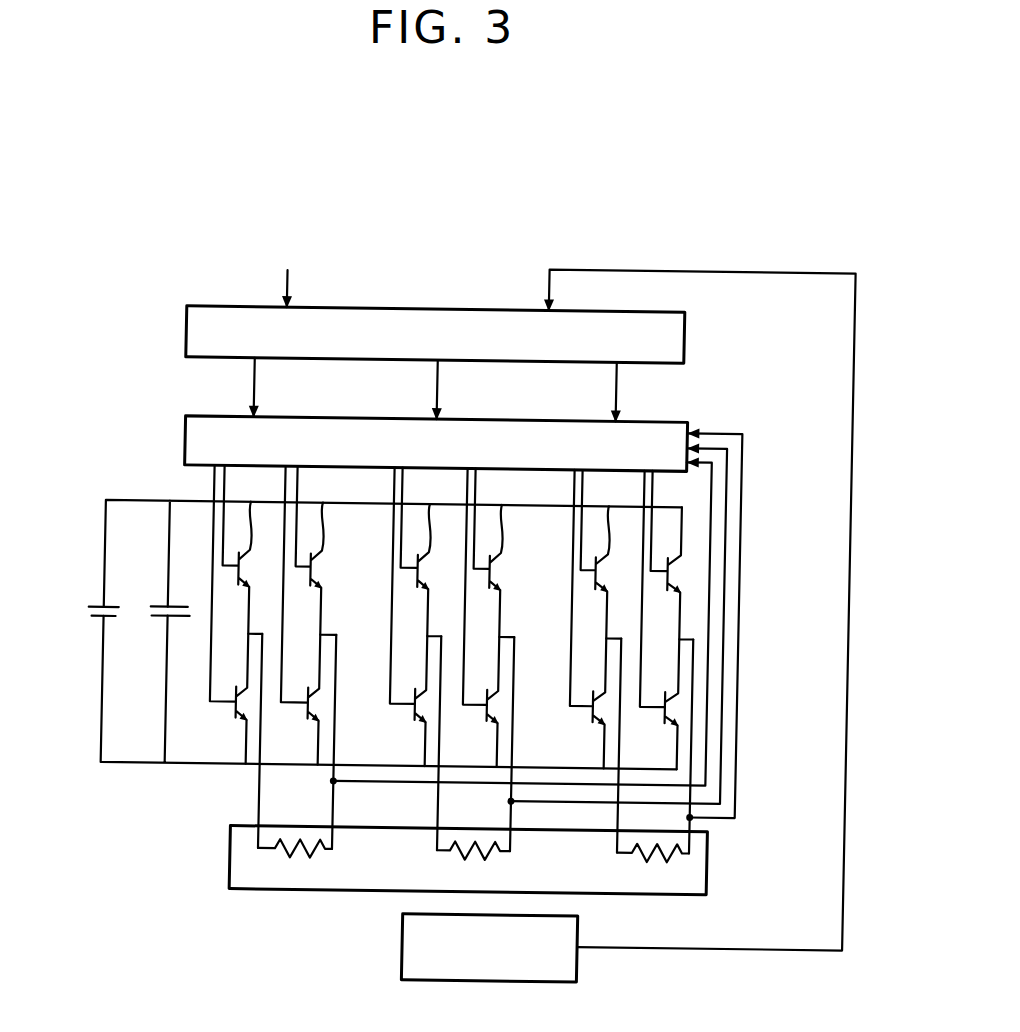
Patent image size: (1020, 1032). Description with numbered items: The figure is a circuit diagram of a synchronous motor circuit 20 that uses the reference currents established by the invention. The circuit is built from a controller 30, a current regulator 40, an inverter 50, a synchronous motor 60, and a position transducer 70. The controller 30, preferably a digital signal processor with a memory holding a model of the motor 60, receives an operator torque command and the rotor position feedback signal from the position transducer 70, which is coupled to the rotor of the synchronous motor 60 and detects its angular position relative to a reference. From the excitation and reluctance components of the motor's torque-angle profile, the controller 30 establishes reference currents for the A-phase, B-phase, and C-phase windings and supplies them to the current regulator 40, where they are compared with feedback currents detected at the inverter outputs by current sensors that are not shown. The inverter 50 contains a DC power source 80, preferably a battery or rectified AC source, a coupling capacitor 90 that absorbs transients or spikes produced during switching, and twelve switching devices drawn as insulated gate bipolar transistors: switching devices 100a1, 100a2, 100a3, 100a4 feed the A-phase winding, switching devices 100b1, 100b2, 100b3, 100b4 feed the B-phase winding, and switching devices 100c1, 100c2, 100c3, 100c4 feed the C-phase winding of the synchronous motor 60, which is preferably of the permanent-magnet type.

The synchronous motor circuit 20 is at (485, 188).
The controller 30 is at (180, 322).
The current regulator 40 is at (181, 437).
The inverter 50 is at (94, 553).
The synchronous motor 60 is at (235, 859).
The position transducer 70 is at (409, 944).
The DC power source 80 is at (94, 617).
The coupling capacitor 90 is at (167, 616).
The switching device 100a1 is at (249, 573).
The switching device 100a2 is at (230, 706).
The switching device 100a3 is at (324, 573).
The switching device 100a4 is at (307, 711).
The switching device 100b1 is at (431, 568).
The switching device 100b2 is at (416, 710).
The switching device 100b3 is at (507, 570).
The switching device 100b4 is at (485, 712).
The switching device 100c1 is at (613, 574).
The switching device 100c2 is at (594, 716).
The switching device 100c3 is at (680, 576).
The switching device 100c4 is at (681, 711).